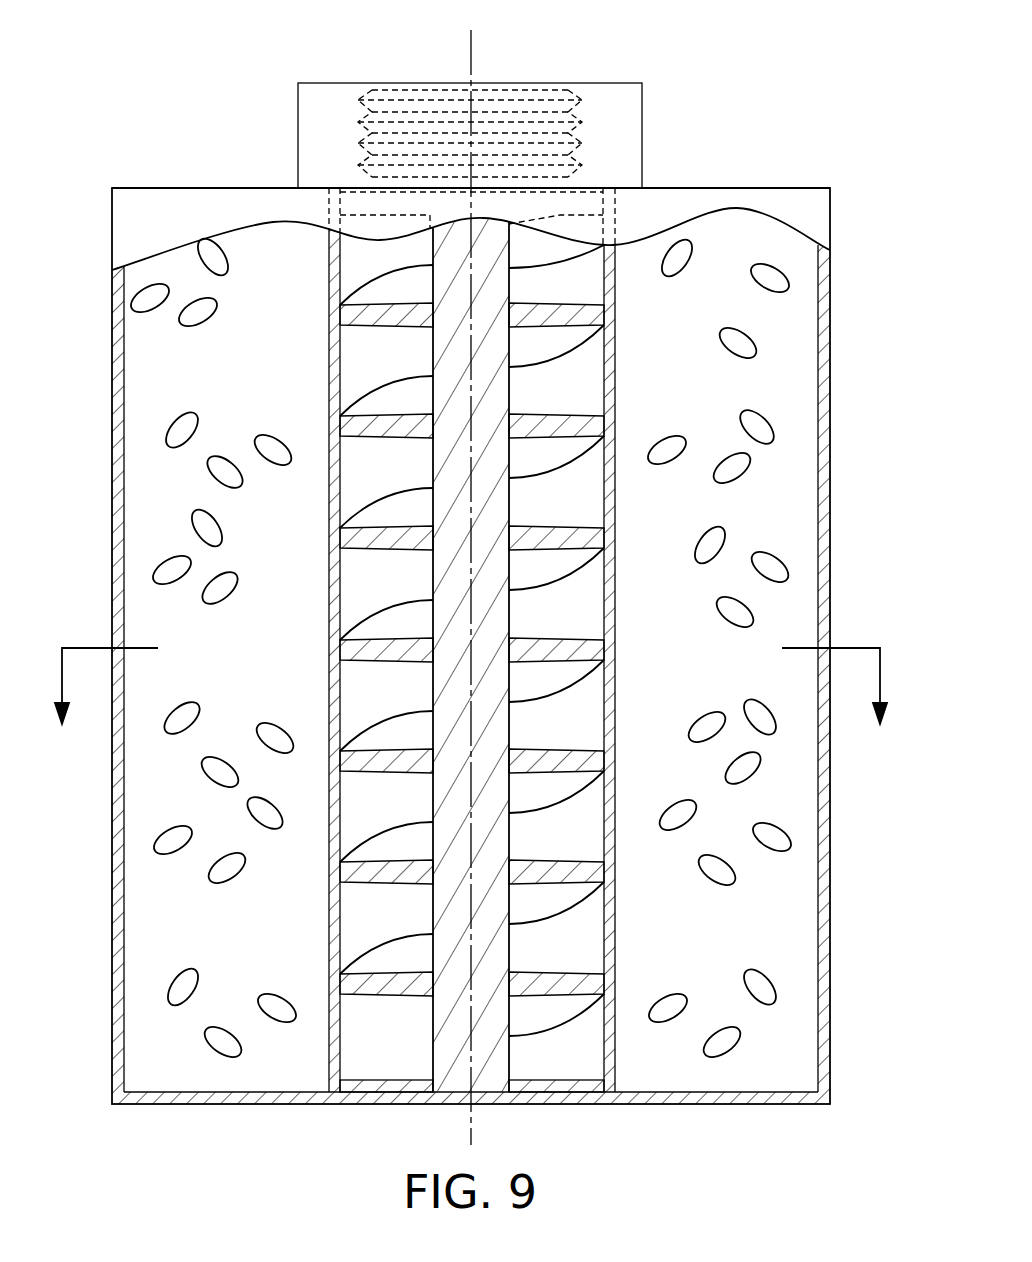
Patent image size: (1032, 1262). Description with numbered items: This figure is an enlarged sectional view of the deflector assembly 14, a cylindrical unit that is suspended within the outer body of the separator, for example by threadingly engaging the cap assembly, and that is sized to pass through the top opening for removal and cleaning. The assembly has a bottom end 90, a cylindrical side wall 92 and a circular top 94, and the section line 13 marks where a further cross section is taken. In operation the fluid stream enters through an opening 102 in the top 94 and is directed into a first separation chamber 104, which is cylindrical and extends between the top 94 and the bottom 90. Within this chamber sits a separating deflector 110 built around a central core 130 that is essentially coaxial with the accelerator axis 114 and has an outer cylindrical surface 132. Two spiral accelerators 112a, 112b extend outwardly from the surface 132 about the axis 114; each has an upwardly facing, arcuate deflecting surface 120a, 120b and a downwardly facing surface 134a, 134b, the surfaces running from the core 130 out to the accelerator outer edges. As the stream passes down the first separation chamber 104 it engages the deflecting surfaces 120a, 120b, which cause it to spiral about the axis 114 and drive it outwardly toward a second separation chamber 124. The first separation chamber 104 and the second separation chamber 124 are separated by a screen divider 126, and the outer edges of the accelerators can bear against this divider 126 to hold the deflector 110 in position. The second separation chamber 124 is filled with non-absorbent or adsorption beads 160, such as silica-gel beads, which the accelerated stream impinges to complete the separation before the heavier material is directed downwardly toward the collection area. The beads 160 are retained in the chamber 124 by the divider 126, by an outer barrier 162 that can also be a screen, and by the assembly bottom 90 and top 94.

The section line 13- 13 is at (470, 713).
The deflector assembly 14 is at (705, 165).
The bottom end 90 is at (220, 1100).
The cylindrical side wall 92 is at (117, 378).
The circular top 94 is at (185, 188).
The opening 102 is at (425, 97).
The first separation chamber 104 is at (358, 246).
The separating deflector 110 is at (438, 457).
The spiral accelerator 112a is at (348, 316).
The spiral accelerator 112b is at (355, 424).
The accelerator axis 114 is at (471, 50).
The upwardly facing deflecting surface 120a is at (382, 290).
The upwardly facing deflecting surface 120b is at (382, 400).
The second separation chamber 124 is at (773, 475).
The screen divider 126 is at (332, 596).
The central core 130 is at (506, 958).
The outer cylindrical surface 132 is at (436, 801).
The downwardly facing surface 134a is at (550, 460).
The downwardly facing surface 134b is at (550, 572).
The adsorption beads 160 is at (148, 296).
The outer barrier 162 is at (117, 472).